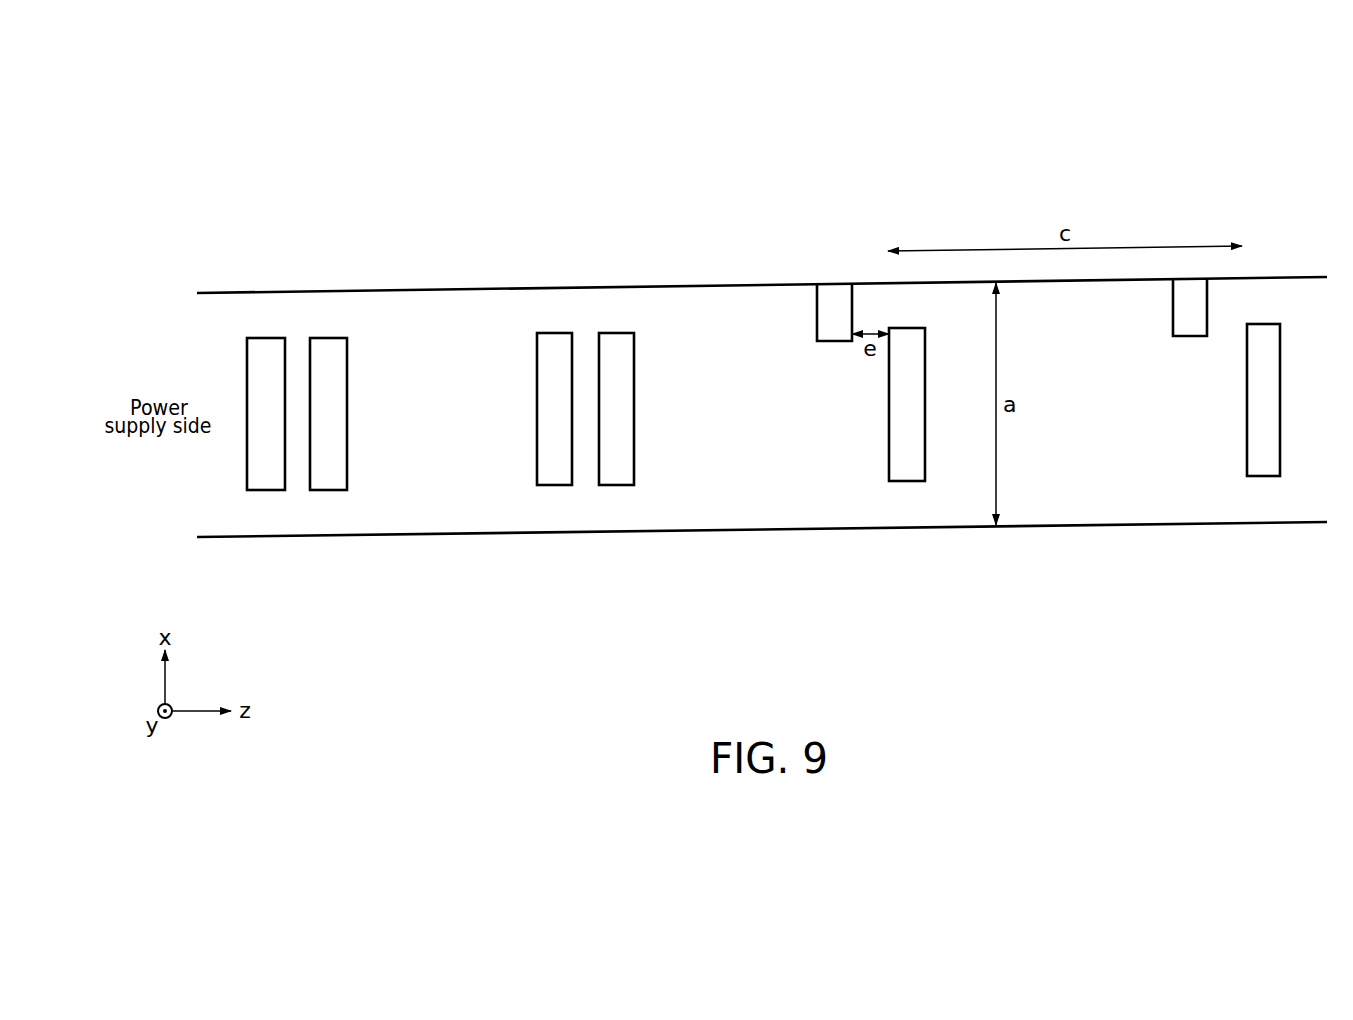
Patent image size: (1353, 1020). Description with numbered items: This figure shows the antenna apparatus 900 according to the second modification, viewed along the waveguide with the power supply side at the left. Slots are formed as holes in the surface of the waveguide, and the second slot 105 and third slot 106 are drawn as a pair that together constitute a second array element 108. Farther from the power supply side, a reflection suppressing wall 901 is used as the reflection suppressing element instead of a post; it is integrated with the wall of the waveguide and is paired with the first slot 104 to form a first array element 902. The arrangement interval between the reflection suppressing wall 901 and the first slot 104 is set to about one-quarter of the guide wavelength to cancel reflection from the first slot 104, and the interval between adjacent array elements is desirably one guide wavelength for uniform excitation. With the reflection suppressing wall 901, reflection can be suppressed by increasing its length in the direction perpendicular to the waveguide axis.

The antenna apparatus 900 is at (1095, 167).
The second array element 108 is at (237, 577).
The third slot 106 is at (265, 490).
The second slot 105 is at (327, 490).
The first array element 902 is at (1175, 567).
The reflection suppressing wall 901 is at (1193, 336).
The first slot 104 is at (1265, 476).